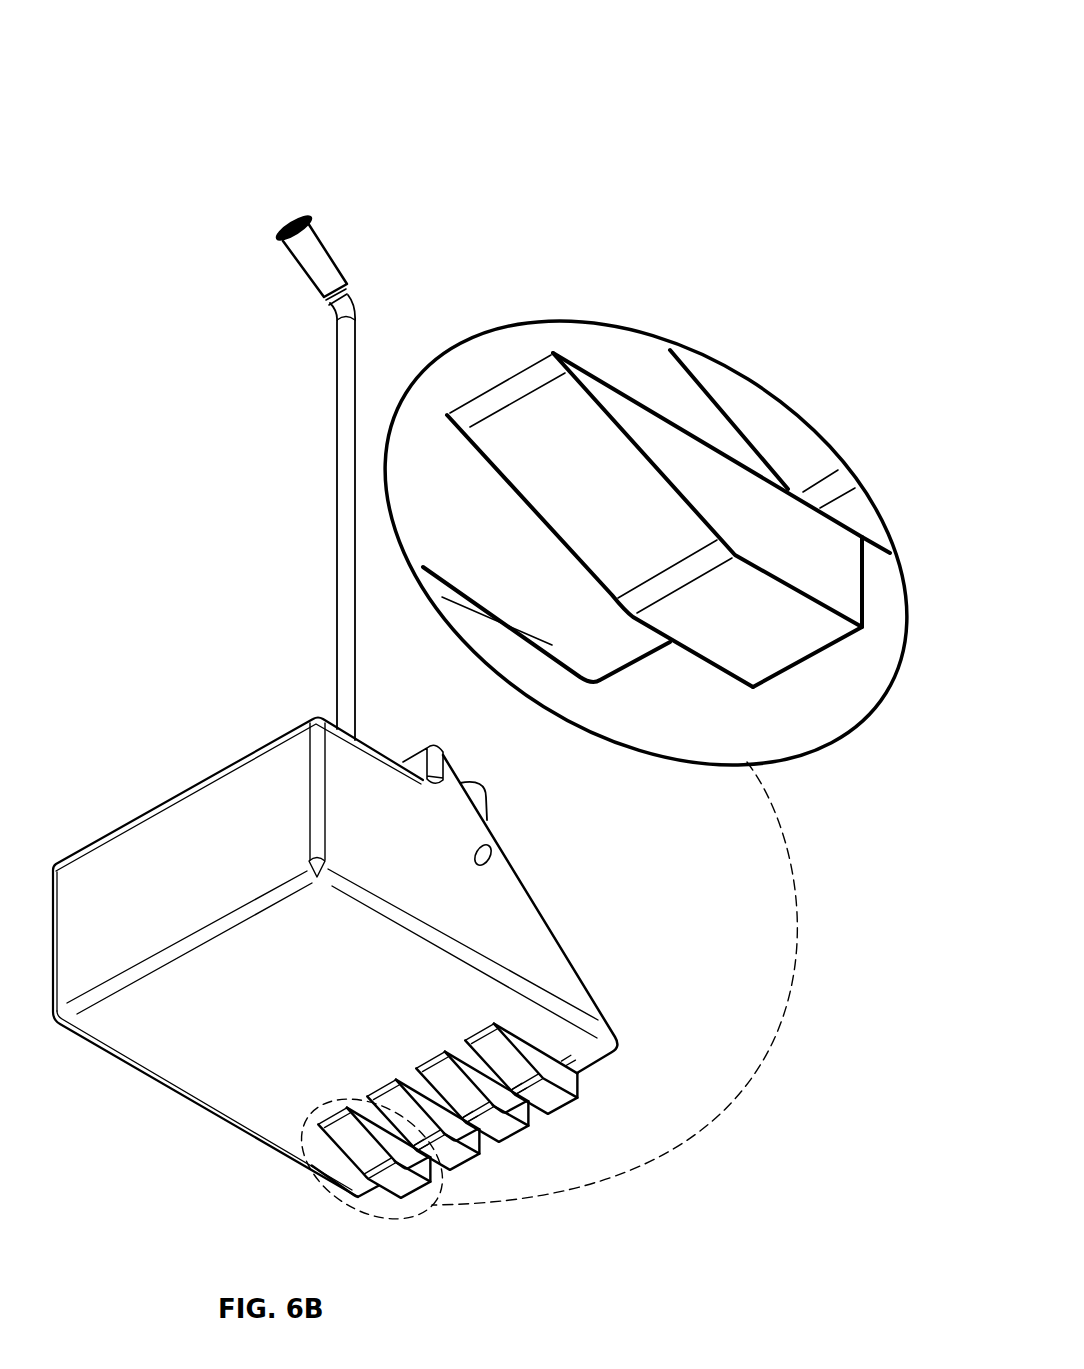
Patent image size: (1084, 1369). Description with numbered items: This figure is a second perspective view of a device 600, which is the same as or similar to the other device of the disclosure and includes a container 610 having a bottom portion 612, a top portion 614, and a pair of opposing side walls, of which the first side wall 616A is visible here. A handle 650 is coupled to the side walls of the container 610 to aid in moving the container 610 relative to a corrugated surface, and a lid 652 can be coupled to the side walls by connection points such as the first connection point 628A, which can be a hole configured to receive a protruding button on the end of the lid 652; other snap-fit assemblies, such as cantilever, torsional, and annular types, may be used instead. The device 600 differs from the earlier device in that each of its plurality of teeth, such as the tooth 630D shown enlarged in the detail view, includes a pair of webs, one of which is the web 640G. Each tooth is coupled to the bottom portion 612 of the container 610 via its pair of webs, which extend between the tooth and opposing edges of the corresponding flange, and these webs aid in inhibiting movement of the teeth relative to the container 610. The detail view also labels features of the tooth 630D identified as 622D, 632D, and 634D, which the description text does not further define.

The device 600 is at (202, 102).
The container 610 is at (196, 740).
The bottom portion 612 is at (210, 1082).
The top portion 614 is at (168, 800).
The first side wall 616A is at (530, 923).
The tab top surface 622D is at (513, 380).
The first connection point 628A is at (480, 857).
The tooth 630D is at (838, 664).
The retention tab 632D is at (766, 620).
The ramp surface 634D is at (590, 447).
The web 640G is at (715, 483).
The handle 650 is at (336, 462).
The lid 652 is at (483, 797).